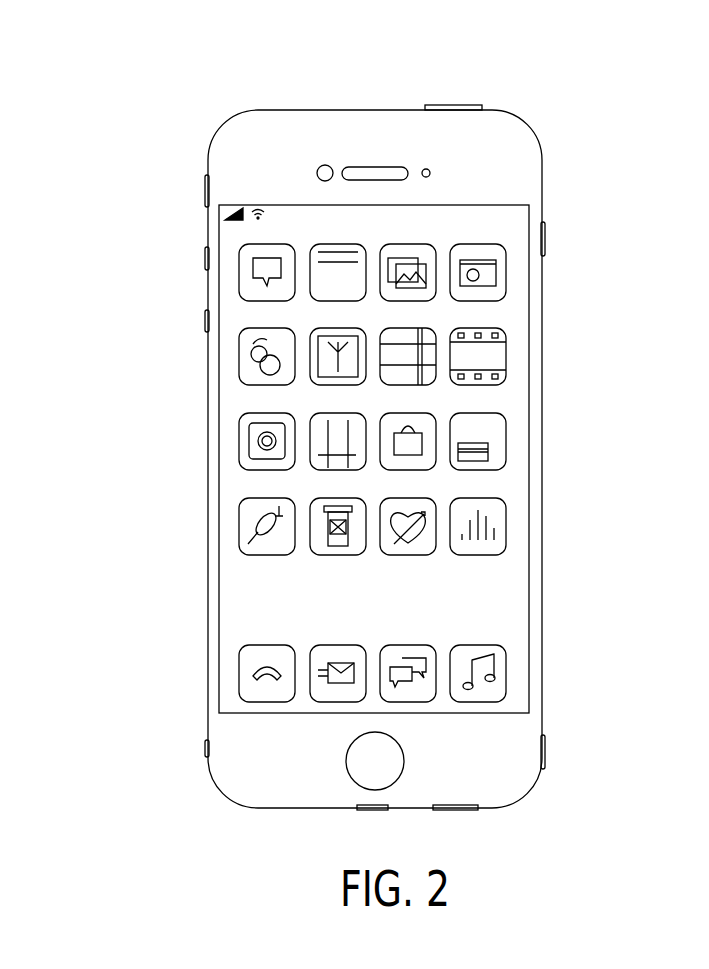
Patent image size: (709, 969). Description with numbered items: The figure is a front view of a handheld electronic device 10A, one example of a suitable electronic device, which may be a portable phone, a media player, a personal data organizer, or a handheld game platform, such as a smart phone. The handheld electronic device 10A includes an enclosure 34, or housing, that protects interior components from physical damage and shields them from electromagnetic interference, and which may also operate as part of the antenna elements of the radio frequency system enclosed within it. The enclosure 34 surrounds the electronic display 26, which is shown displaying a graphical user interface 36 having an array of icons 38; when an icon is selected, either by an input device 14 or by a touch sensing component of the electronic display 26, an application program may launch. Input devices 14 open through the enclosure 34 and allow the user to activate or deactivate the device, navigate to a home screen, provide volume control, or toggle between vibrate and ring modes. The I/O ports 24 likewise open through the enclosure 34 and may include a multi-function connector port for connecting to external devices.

The handheld electronic device 10A is at (364, 442).
The input devices 14 is at (455, 107).
The input/output ports 24 is at (261, 810).
The electronic display 26 is at (529, 589).
The enclosure 34 is at (542, 190).
The graphical user interface 36 is at (421, 473).
The icons 38 is at (408, 556).